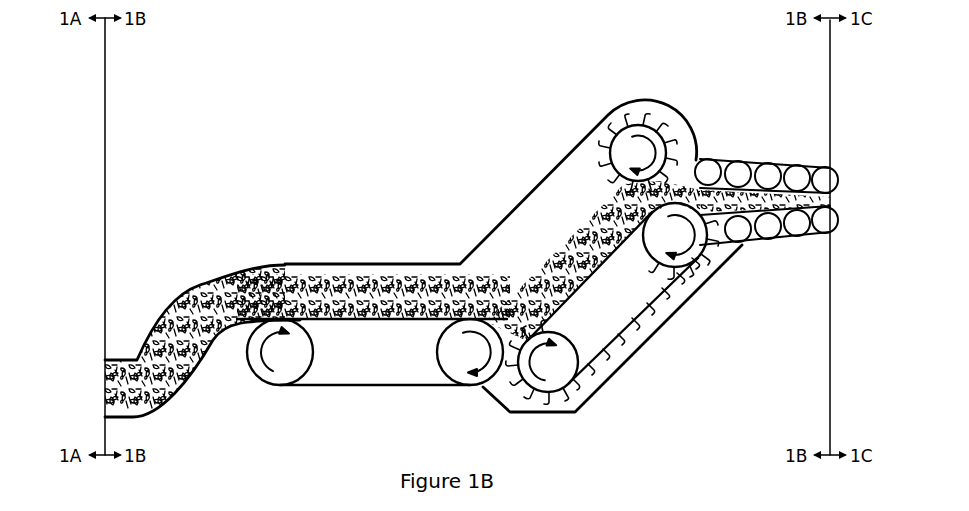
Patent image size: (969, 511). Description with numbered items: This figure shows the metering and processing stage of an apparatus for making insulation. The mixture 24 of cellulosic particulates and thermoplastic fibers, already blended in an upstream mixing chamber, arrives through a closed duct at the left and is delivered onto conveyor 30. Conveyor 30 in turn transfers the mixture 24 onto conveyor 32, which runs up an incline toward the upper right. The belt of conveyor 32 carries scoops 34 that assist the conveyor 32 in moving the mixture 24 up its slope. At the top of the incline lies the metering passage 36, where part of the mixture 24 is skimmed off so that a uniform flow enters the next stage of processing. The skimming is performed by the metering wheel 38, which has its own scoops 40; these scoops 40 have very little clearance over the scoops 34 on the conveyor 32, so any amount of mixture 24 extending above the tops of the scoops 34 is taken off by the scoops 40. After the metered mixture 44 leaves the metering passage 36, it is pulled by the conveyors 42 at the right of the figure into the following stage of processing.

The mixture 24 is at (103, 385).
The conveyor 30 is at (373, 355).
The conveyor 32 is at (617, 290).
The scoops 34 is at (690, 295).
The metering passage 36 is at (605, 203).
The metering wheel 38 is at (634, 128).
The scoops 40 is at (668, 118).
The conveyors 42 is at (768, 175).
The metered mixture 44 is at (830, 202).